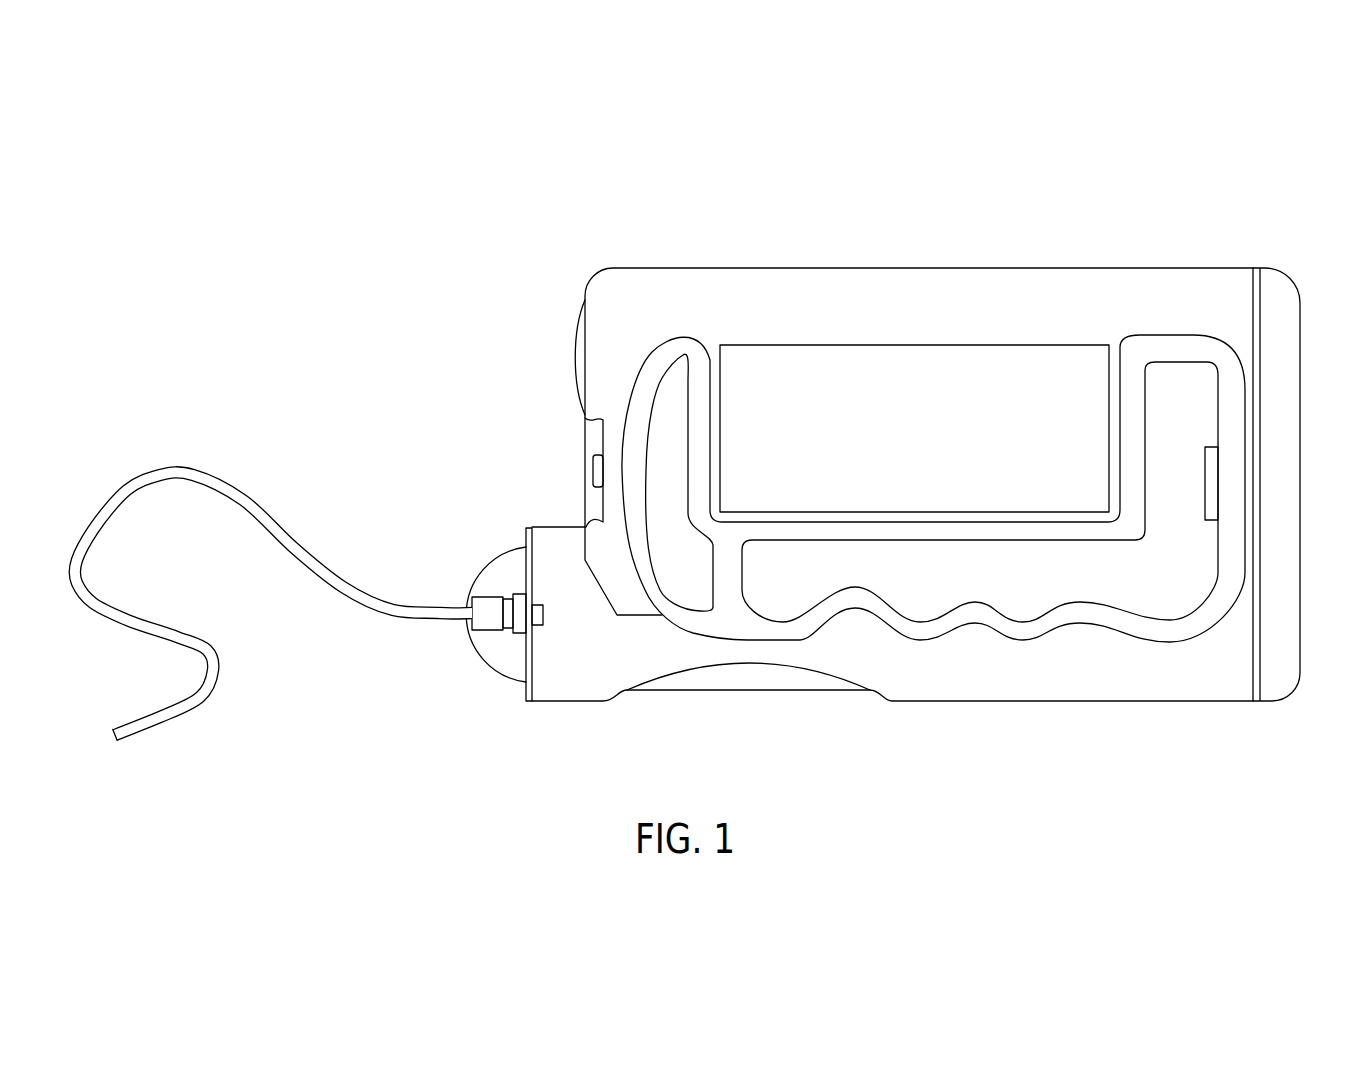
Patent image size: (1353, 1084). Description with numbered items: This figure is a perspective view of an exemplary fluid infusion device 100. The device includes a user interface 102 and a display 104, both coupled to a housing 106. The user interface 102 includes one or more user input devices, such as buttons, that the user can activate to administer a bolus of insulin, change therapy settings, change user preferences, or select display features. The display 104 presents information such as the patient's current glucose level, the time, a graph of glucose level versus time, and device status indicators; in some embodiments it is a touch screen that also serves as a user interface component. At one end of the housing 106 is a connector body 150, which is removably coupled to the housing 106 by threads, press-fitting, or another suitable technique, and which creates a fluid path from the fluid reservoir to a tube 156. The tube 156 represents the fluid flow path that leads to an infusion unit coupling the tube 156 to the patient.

The fluid infusion device 100 is at (1271, 188).
The user interface 102 is at (1196, 336).
The display 104 is at (987, 343).
The housing 106 is at (1110, 702).
The connector body 150 is at (508, 684).
The tube 156 is at (352, 582).